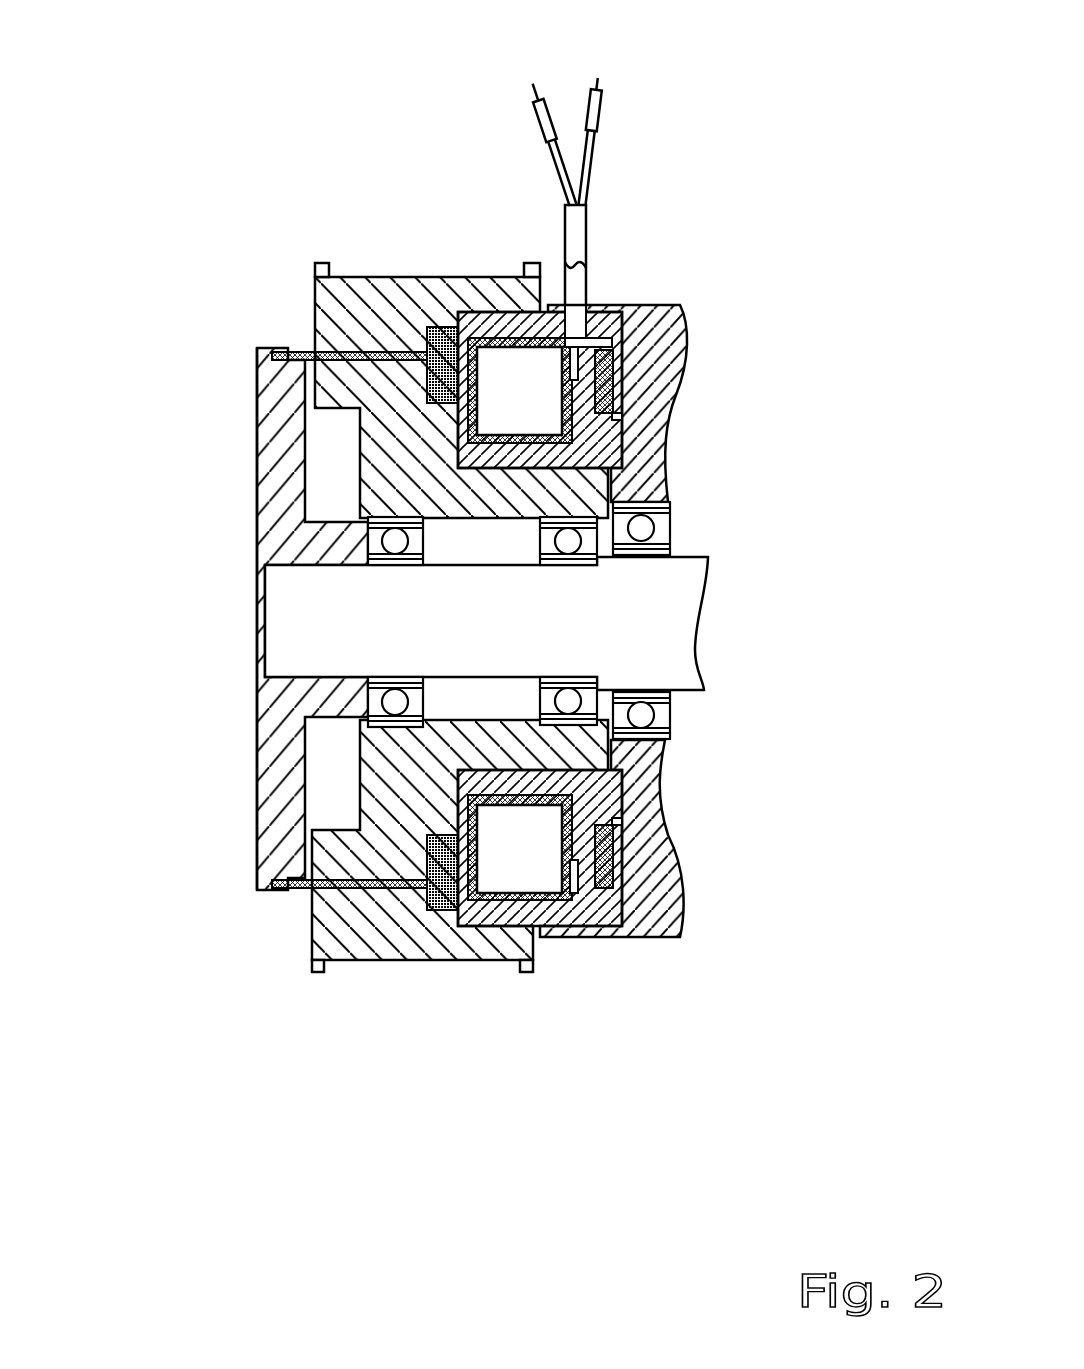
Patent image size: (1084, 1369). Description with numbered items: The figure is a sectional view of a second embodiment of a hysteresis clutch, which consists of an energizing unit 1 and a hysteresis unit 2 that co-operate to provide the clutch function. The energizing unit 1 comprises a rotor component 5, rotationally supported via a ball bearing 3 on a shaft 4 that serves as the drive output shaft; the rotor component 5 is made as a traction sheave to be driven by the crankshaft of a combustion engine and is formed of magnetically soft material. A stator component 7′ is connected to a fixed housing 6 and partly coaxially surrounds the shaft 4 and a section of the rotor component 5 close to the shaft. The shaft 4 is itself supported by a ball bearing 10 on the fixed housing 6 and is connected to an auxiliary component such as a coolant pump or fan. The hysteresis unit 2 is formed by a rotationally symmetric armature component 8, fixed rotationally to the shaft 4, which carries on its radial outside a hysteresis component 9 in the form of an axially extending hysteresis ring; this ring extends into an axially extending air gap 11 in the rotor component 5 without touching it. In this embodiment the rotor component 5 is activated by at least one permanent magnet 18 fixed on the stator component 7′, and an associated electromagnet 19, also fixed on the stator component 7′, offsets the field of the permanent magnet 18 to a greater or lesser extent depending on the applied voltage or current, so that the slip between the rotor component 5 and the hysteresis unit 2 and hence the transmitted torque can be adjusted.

The energizing unit 1 is at (640, 197).
The hysteresis unit 2 is at (235, 403).
The ball bearing 3 is at (570, 702).
The shaft 4 is at (585, 600).
The rotor component 5 is at (390, 307).
The fixed housing 6 is at (640, 380).
The stator component 7′ is at (583, 915).
The armature component 8 is at (277, 498).
The hysteresis component 9 is at (307, 353).
The ball bearing 10 is at (645, 715).
The air gap 11 is at (377, 885).
The permanent magnet 18 is at (630, 360).
The electromagnet 19 is at (523, 853).